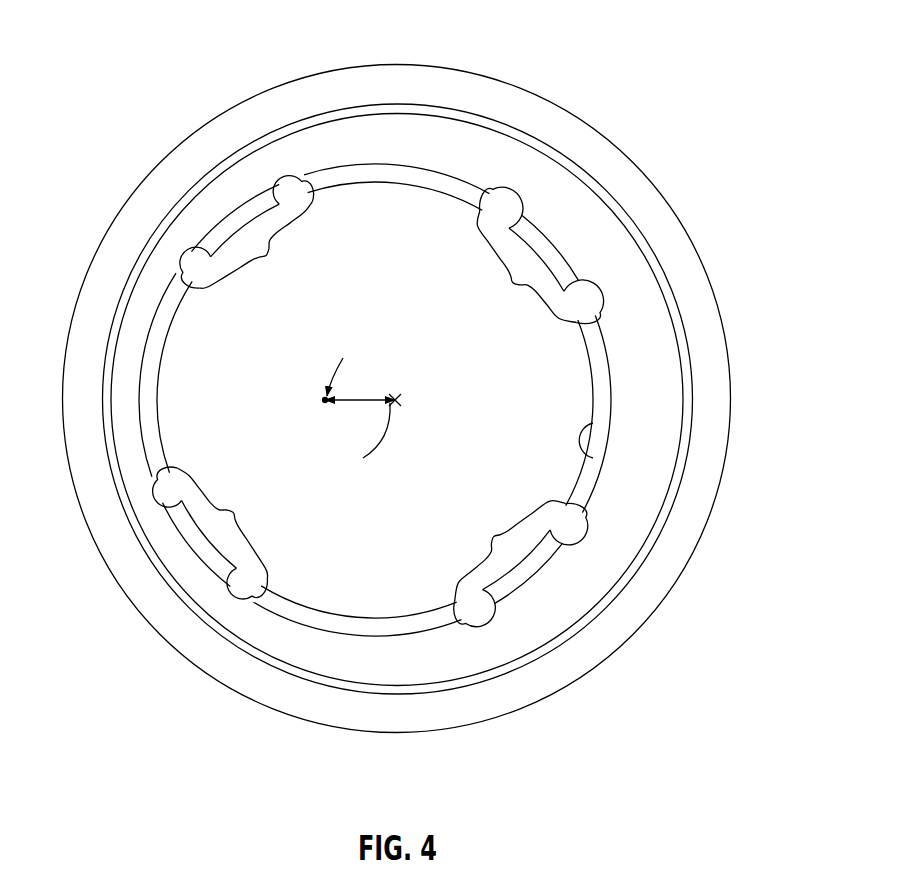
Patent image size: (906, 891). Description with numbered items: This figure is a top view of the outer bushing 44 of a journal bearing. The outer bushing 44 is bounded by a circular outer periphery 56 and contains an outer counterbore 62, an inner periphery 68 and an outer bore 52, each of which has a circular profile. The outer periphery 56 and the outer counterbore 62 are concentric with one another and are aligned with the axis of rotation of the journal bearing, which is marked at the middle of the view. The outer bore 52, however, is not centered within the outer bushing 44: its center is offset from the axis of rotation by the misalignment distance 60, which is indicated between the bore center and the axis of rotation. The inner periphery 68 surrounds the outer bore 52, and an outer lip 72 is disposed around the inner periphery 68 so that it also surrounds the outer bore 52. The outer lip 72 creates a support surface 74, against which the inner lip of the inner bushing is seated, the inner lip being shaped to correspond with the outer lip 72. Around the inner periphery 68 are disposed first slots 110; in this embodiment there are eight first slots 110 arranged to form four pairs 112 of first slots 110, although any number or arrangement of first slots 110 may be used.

The outer bushing 44 is at (708, 212).
The outer bore 52 is at (445, 207).
The outer periphery 56 is at (623, 152).
The misalignment distance 60 is at (345, 403).
The outer counterbore 62 is at (677, 480).
The inner periphery 68 is at (592, 424).
The outer lip 72 is at (338, 177).
The support surface 74 is at (470, 188).
The first slots 110 is at (527, 196).
The pairs of first slots 112 is at (267, 256).